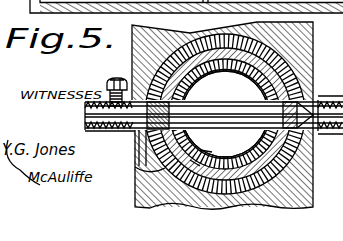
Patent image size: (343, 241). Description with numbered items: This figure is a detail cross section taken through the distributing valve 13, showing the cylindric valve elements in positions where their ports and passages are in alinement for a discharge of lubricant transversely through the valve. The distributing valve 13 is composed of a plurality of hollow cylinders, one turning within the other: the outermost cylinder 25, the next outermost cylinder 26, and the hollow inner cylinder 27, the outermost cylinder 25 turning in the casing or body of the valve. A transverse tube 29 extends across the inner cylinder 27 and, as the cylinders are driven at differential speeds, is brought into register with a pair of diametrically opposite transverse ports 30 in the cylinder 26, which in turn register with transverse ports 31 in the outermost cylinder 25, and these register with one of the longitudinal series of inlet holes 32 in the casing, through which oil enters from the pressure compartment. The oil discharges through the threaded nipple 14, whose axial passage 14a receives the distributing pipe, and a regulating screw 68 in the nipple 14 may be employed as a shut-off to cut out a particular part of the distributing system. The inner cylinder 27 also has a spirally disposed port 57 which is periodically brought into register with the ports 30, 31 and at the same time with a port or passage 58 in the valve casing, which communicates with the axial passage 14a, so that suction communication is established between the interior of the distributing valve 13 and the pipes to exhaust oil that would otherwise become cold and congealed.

The distributing valve 13 is at (132, 47).
The threaded nipple 14 is at (85, 110).
The axial passage 14a is at (85, 125).
The outermost cylinder 25 is at (272, 70).
The intermediate cylinder 26 is at (264, 80).
The inner cylinder 27 is at (256, 92).
The transverse tube 29 is at (213, 143).
The transverse port 30 is at (183, 110).
The transverse port 31 is at (188, 102).
The inlet hole 32 is at (304, 110).
The port 57 is at (195, 163).
The port or passage 58 is at (145, 170).
The regulating screw 68 is at (117, 79).